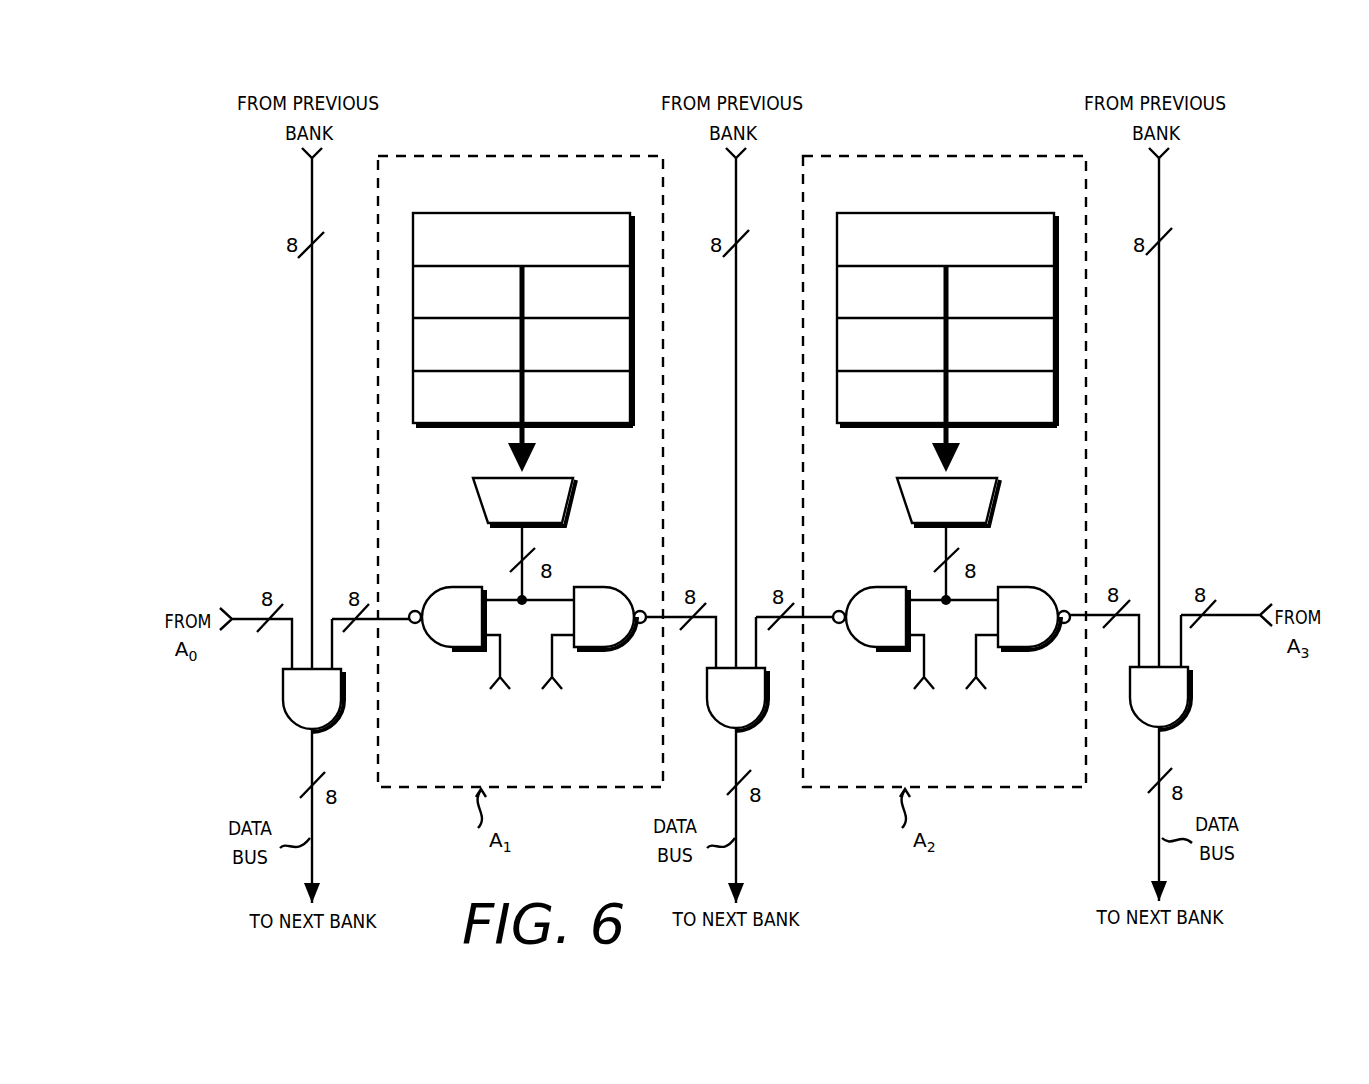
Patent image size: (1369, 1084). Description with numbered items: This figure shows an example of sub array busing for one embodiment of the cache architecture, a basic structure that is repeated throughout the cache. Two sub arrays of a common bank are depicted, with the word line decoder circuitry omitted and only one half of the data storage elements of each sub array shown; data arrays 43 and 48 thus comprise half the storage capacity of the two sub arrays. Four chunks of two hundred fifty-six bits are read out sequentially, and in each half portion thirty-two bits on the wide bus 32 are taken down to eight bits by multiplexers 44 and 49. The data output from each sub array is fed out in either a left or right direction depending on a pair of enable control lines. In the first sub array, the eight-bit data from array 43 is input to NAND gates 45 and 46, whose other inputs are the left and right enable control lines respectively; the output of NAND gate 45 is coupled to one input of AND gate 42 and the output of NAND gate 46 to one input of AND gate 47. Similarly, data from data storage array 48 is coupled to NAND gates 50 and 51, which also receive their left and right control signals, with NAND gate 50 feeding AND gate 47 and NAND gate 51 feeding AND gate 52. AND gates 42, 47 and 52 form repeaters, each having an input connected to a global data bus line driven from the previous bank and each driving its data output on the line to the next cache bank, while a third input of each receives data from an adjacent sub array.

The 32-bit bus from memory array to multiplexer 32 is at (510, 385).
The AND gate 42 is at (299, 711).
The data array 43 is at (586, 213).
The multiplexer 44 is at (575, 492).
The NAND gate 45 is at (439, 629).
The NAND gate 46 is at (584, 629).
The AND gate 47 is at (723, 710).
The data storage array 48 is at (1009, 213).
The multiplexer 49 is at (999, 492).
The NAND gate 50 is at (863, 629).
The NAND gate 51 is at (1008, 629).
The AND gate 52 is at (1146, 709).